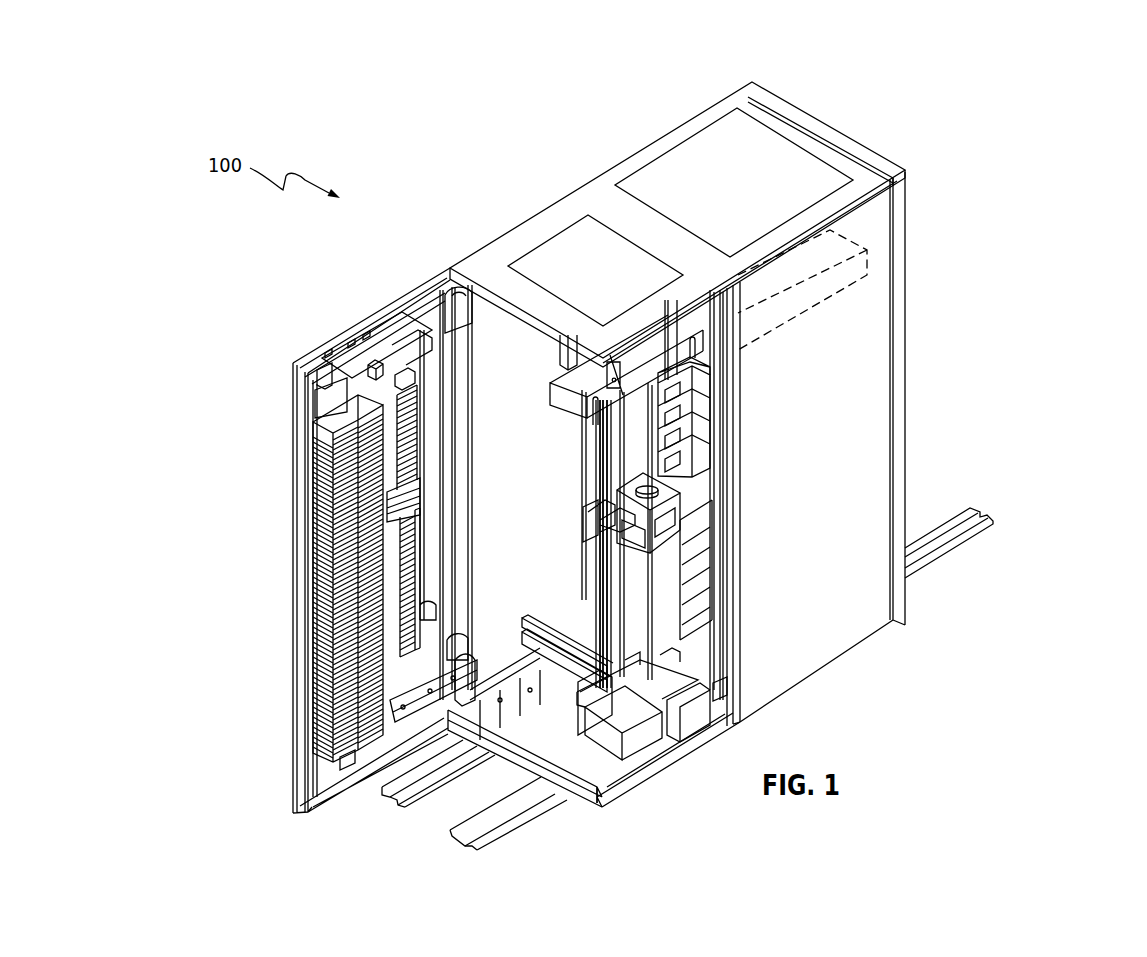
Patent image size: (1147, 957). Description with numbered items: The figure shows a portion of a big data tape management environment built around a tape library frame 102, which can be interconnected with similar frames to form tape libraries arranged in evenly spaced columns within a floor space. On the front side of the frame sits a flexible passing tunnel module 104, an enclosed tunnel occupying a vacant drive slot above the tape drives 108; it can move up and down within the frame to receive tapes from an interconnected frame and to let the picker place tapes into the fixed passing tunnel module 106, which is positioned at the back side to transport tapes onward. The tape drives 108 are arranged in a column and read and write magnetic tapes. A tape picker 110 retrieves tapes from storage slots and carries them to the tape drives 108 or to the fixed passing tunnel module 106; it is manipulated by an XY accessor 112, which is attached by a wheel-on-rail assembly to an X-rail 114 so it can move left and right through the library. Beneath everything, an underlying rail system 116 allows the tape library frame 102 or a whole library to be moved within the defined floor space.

The tape library frame 102 is at (842, 122).
The flexible passing tunnel module 104 is at (692, 363).
The fixed passing tunnel module 106 is at (884, 265).
The tape drives 108 is at (722, 460).
The tape picker 110 is at (618, 483).
The XY accessor 112 is at (575, 512).
The X-rail 114 is at (528, 607).
The underlying rail system 116 is at (447, 843).